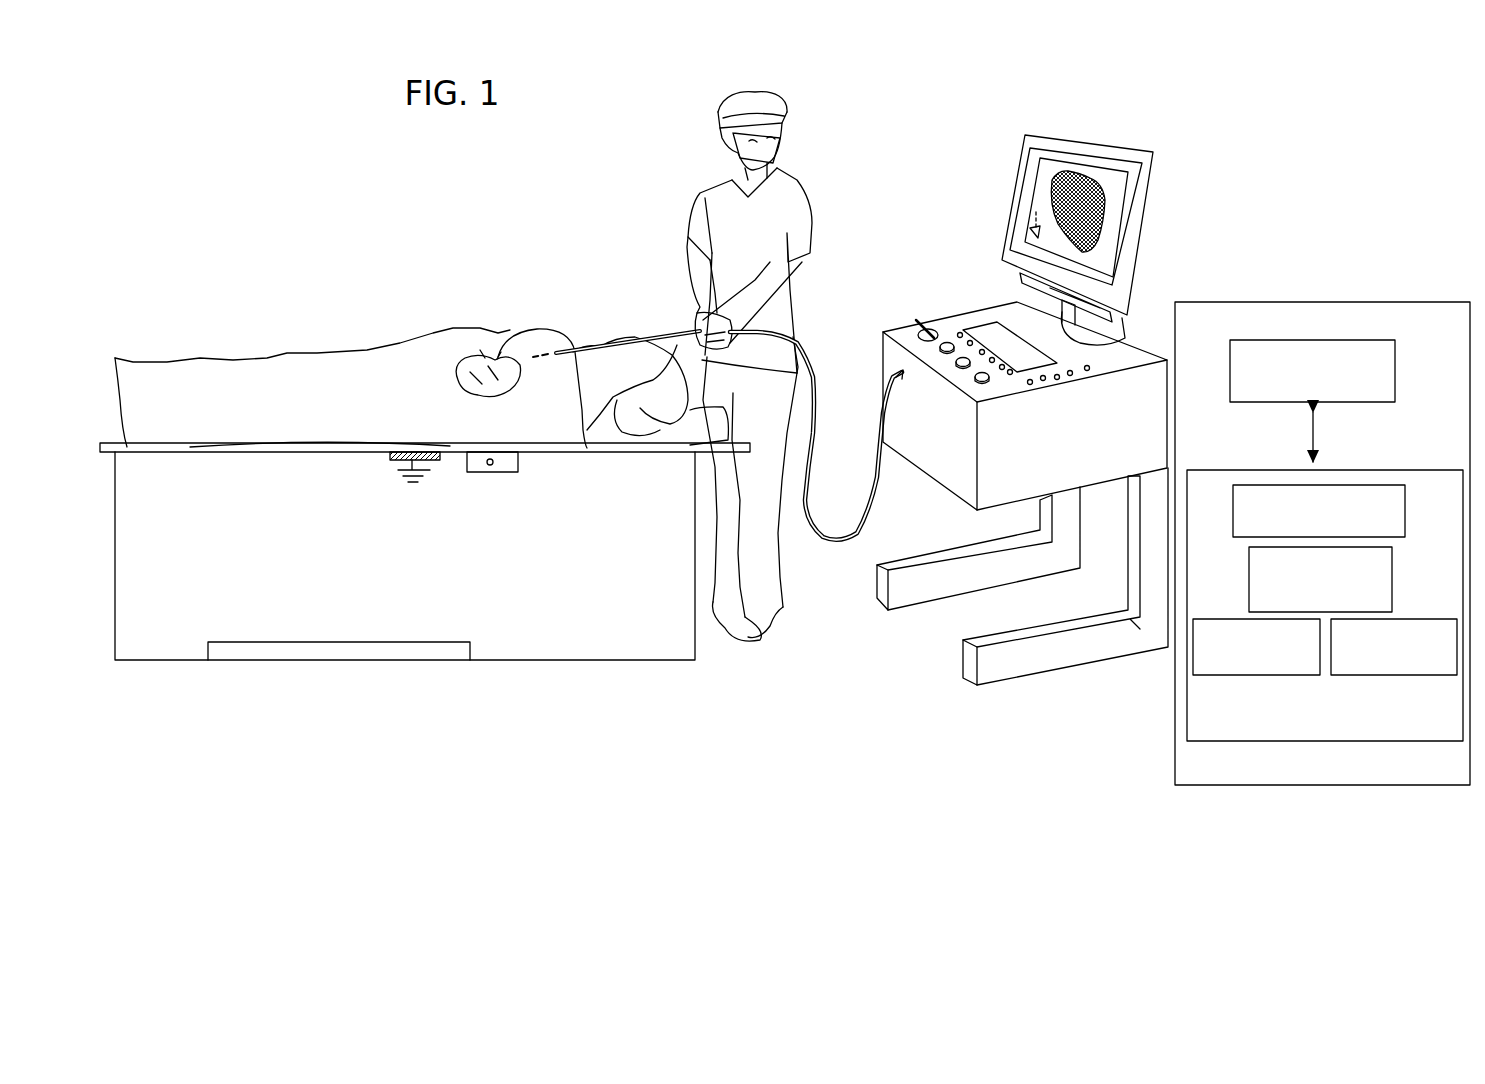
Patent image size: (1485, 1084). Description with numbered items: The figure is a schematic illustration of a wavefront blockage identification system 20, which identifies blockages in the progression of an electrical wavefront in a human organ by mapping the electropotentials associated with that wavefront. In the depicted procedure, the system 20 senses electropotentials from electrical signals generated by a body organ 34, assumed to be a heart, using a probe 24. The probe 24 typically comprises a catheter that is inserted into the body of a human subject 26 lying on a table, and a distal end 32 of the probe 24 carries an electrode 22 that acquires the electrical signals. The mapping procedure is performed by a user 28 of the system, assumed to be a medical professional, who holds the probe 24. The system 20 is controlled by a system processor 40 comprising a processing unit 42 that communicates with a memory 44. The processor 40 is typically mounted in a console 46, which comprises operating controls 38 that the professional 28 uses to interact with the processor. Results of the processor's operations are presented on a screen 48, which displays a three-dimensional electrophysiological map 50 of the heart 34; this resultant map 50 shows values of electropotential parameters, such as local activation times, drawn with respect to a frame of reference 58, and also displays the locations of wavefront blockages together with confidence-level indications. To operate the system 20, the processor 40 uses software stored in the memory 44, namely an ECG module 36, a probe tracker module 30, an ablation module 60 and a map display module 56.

The wavefront blockage identification system 20 is at (1056, 79).
The electrode 22 is at (452, 293).
The probe 24 is at (815, 355).
The human subject 26 is at (665, 403).
The user 28 is at (720, 225).
The probe tracker module 30 is at (1193, 667).
The distal end 32 is at (482, 355).
The body organ 34 is at (505, 335).
The ECG module 36 is at (1405, 676).
The operating controls 38 is at (1016, 412).
The system processor 40 is at (1220, 787).
The processing unit 42 is at (1380, 340).
The memory 44 is at (1187, 725).
The console 46 is at (965, 312).
The screen 48 is at (1058, 143).
The electrophysiological map 50 is at (1085, 218).
The map display module 56 is at (1262, 485).
The frame of reference 58 is at (1035, 213).
The ablation module 60 is at (1395, 580).